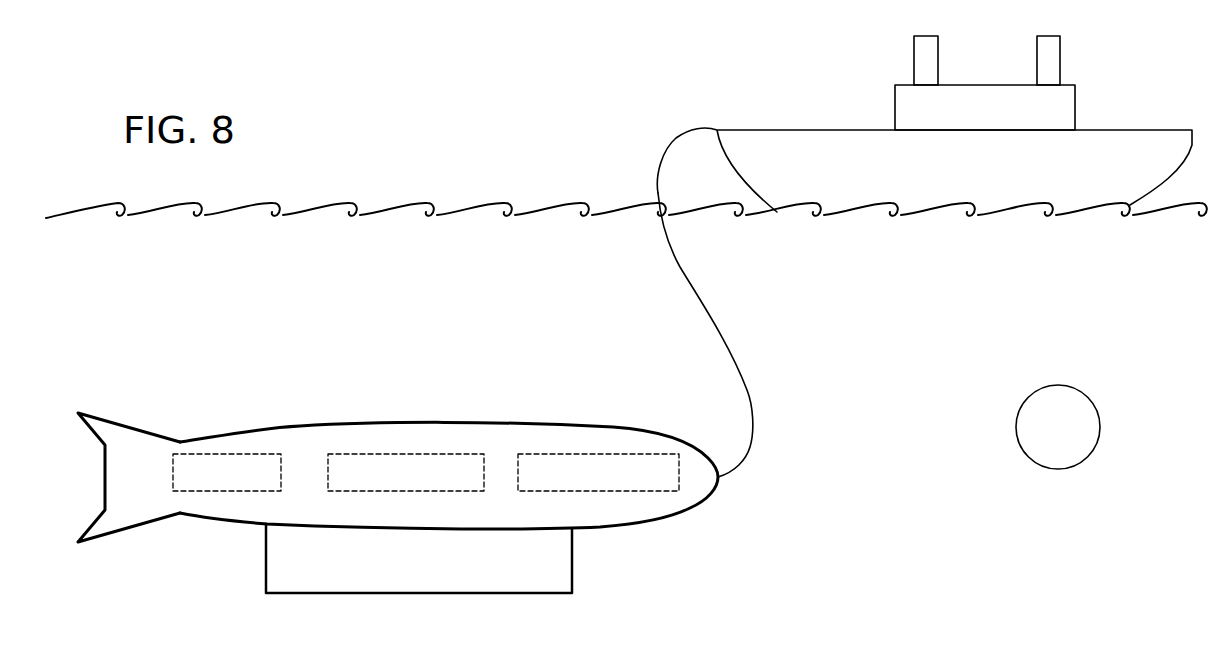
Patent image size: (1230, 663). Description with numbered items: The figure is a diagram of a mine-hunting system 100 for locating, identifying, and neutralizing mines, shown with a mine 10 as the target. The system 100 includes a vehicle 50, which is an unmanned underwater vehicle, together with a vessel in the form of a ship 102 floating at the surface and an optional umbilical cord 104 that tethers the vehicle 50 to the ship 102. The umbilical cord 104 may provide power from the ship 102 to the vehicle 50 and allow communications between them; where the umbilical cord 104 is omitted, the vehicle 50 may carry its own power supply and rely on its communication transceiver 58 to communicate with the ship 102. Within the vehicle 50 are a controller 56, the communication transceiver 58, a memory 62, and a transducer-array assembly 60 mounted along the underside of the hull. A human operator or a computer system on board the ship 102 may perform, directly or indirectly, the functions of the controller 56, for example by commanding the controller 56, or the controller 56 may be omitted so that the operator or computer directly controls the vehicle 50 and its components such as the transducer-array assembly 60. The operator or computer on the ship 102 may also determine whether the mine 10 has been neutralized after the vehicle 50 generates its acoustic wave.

The mine 10 is at (1108, 392).
The vehicle 50 is at (398, 470).
The controller 56 is at (408, 452).
The communication transceiver 58 is at (593, 452).
The transducer-array assembly 60 is at (572, 560).
The memory 62 is at (227, 452).
The mine-hunting system 100 is at (908, 518).
The ship 102 is at (1130, 130).
The umbilical cord 104 is at (720, 337).